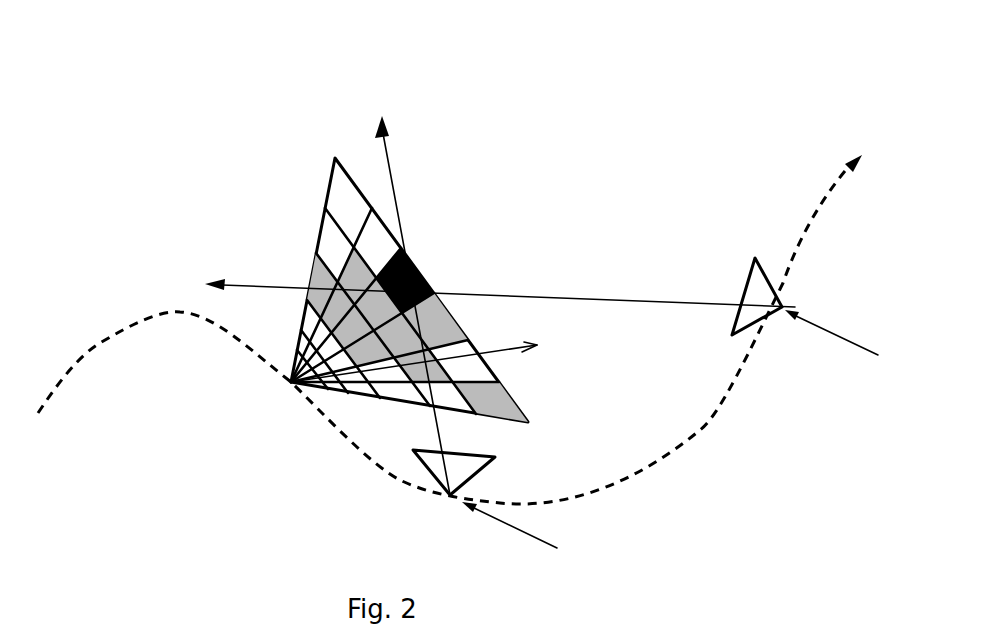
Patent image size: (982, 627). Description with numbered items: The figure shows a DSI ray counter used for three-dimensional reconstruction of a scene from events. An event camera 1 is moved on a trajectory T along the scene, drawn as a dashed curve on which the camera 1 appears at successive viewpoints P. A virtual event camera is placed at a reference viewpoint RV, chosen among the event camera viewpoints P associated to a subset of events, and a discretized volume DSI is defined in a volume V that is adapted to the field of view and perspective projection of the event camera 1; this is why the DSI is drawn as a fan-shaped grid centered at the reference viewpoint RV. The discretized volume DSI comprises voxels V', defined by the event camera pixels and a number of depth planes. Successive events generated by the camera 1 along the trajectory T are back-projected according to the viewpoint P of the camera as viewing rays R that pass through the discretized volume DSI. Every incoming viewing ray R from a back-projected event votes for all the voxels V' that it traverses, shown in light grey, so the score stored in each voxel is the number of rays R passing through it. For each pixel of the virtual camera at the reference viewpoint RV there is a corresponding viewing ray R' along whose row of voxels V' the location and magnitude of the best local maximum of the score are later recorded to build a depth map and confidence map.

The event camera 1 is at (450, 497).
The discretized volume DSI is at (318, 177).
The volume V is at (370, 267).
The voxels V' is at (379, 298).
The viewing rays R is at (500, 207).
The viewing ray R' is at (433, 402).
The trajectory T is at (100, 345).
The viewpoint P is at (679, 444).
The reference viewpoint RV is at (264, 401).